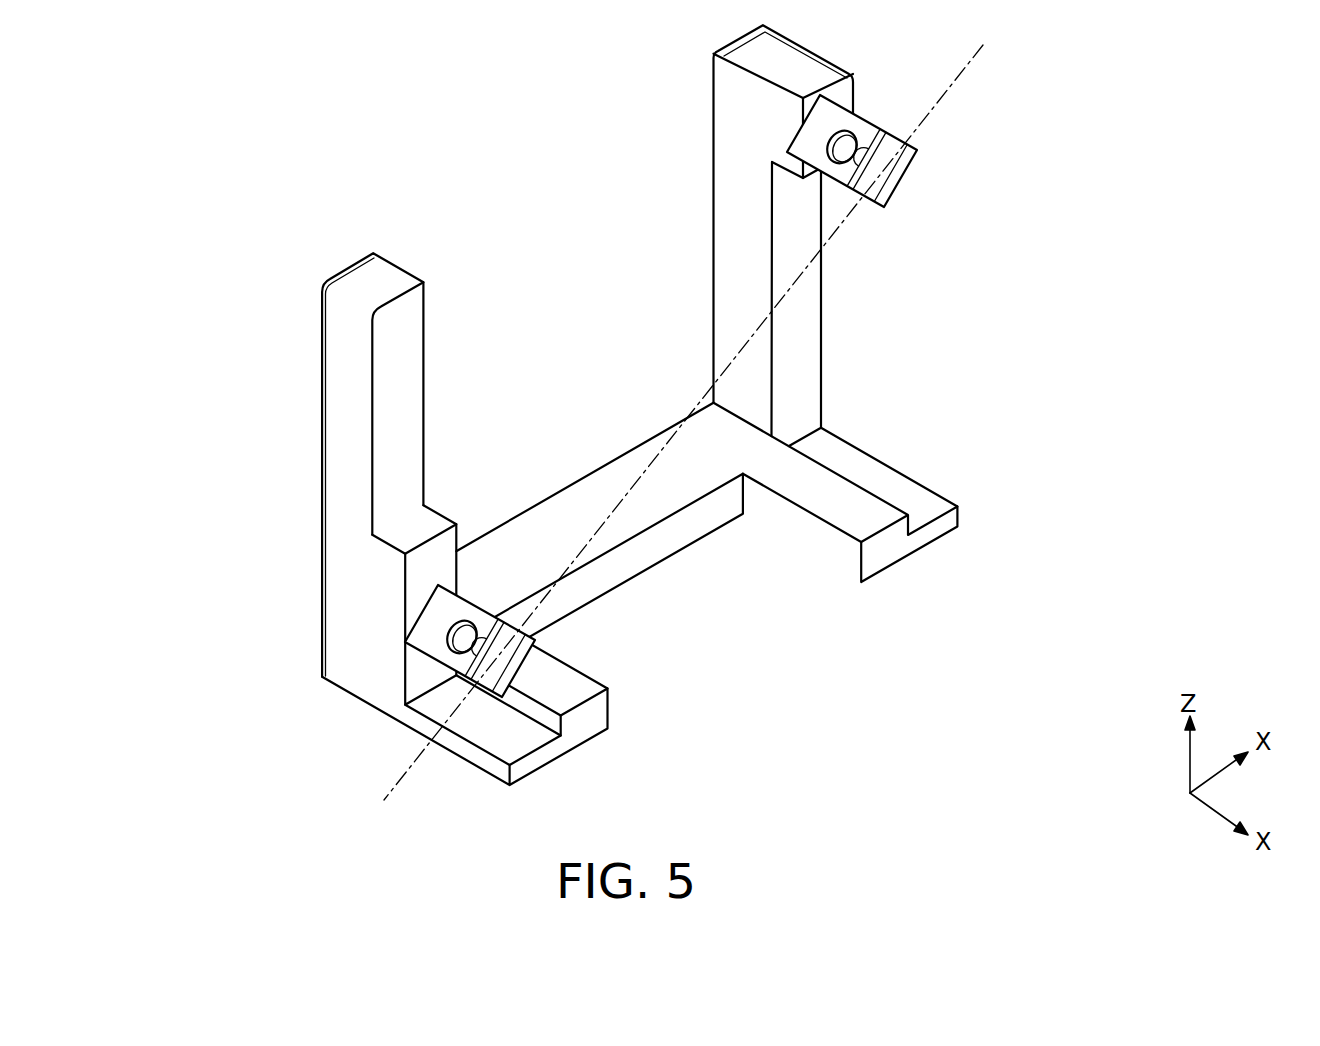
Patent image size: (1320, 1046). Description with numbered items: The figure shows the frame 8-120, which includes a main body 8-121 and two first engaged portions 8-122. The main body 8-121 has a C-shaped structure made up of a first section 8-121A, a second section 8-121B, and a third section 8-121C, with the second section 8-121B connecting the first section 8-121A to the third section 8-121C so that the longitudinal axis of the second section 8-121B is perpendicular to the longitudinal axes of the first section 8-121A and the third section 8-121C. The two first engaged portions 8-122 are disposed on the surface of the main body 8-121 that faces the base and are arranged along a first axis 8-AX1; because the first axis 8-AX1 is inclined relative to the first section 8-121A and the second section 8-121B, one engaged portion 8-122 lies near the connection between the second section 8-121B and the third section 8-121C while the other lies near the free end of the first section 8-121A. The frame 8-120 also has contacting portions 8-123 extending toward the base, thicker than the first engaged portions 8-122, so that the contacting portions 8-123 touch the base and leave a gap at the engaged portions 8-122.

The frame 8-120 is at (197, 54).
The main body 8-121 is at (577, 420).
The first section 8-121A is at (805, 325).
The second section 8-121B is at (583, 493).
The third section 8-121C is at (342, 428).
The first engaged portion 8-122 is at (905, 182).
The contacting portion 8-123 is at (897, 547).
The first axis 8-AX1 is at (973, 55).